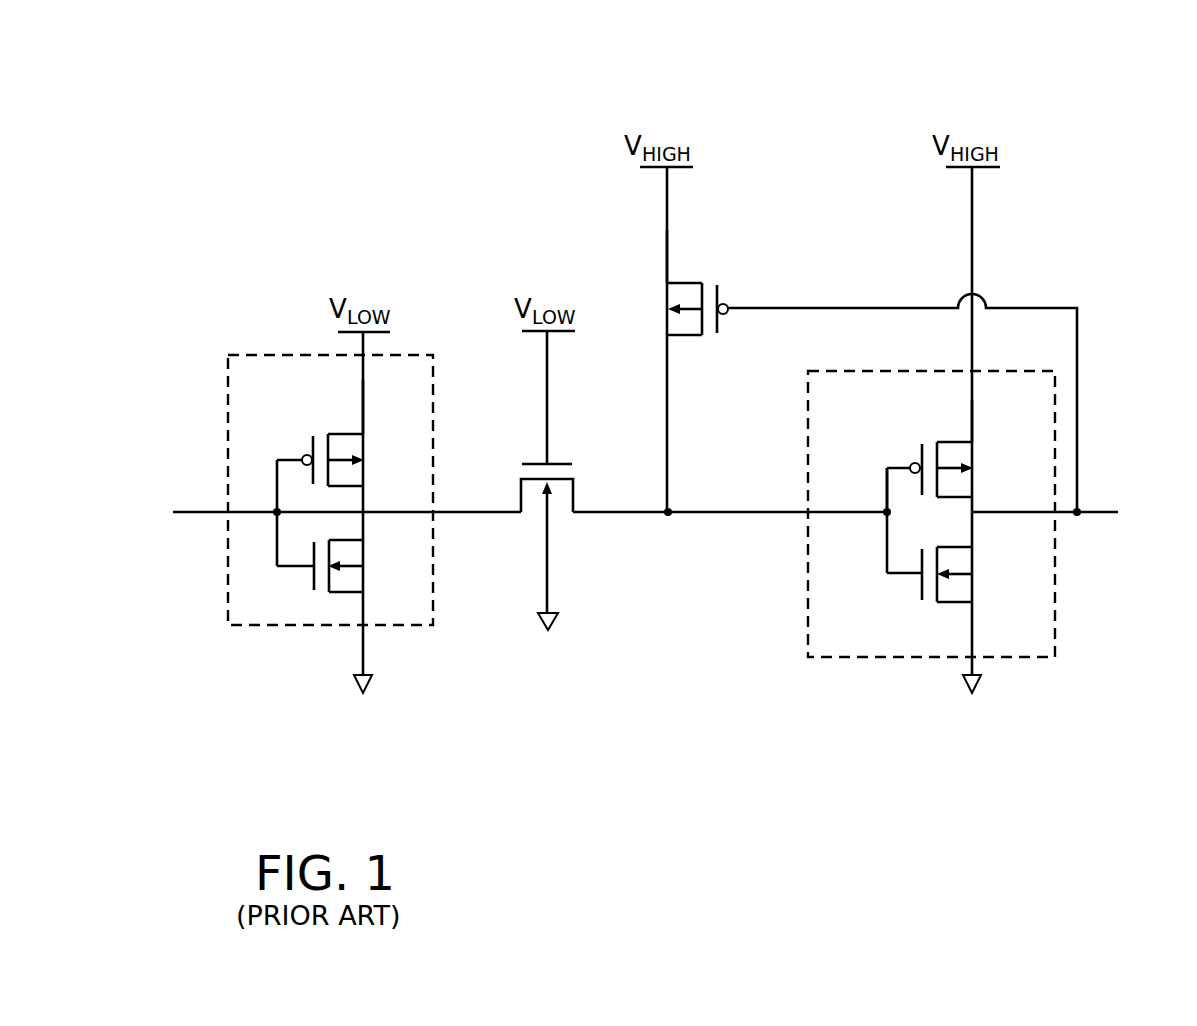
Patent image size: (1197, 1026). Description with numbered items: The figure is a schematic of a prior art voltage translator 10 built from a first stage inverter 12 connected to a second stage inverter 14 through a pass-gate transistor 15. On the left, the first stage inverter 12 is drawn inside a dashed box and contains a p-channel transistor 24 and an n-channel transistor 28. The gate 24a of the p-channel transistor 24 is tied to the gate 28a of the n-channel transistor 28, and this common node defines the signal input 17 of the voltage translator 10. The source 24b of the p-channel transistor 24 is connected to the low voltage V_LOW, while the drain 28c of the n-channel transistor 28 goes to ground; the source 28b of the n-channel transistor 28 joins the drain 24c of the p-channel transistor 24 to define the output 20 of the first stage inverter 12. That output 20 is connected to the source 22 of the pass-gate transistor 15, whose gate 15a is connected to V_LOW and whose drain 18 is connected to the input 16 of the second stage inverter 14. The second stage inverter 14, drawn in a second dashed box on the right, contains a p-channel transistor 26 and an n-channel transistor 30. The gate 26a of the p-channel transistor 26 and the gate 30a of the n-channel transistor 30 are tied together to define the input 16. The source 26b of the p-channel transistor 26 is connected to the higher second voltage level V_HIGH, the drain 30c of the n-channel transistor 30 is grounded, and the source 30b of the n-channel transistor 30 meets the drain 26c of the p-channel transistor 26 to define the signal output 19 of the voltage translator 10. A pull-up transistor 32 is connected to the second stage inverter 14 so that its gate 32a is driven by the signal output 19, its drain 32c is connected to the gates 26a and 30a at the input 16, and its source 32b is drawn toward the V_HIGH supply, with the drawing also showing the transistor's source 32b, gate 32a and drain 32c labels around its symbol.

The voltage translator 10 is at (1083, 130).
The first stage inverter 12 is at (226, 372).
The second stage inverter 14 is at (805, 433).
The pass-gate transistor 15 is at (561, 538).
The gate of pass-gate transistor 15a is at (545, 402).
The input of second stage inverter 16 is at (883, 518).
The signal input 17 is at (186, 508).
The drain of pass-gate transistor 18 is at (575, 493).
The signal output 19 is at (975, 508).
The output of first stage inverter 20 is at (368, 510).
The source of pass-gate transistor 22 is at (520, 492).
The p-channel transistor 24 is at (371, 460).
The gate of p-channel transistor 24a is at (297, 458).
The source of p-channel transistor 24b is at (345, 433).
The drain of p-channel transistor 24c is at (342, 487).
The p-channel transistor 26 is at (979, 480).
The gate of p-channel transistor 26a is at (910, 465).
The source of p-channel transistor 26b is at (950, 442).
The drain of p-channel transistor 26c is at (963, 497).
The n-channel transistor 28 is at (373, 566).
The gate of n-channel transistor 28a is at (277, 560).
The source of n-channel transistor 28b is at (352, 536).
The drain of n-channel transistor 28c is at (298, 570).
The n-channel transistor 30 is at (980, 563).
The gate of n-channel transistor 30a is at (900, 577).
The source of n-channel transistor 30b is at (967, 547).
The drain of n-channel transistor 30c is at (955, 603).
The pull-up transistor 32 is at (657, 321).
The gate of pull-up transistor 32a is at (813, 305).
The source of pull-up transistor 32b is at (683, 282).
The drain of pull-up transistor 32c is at (692, 338).